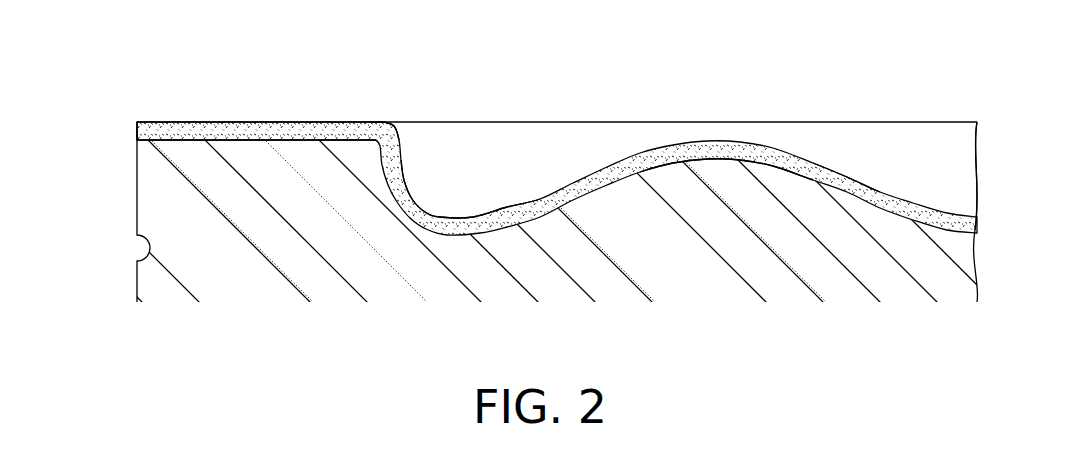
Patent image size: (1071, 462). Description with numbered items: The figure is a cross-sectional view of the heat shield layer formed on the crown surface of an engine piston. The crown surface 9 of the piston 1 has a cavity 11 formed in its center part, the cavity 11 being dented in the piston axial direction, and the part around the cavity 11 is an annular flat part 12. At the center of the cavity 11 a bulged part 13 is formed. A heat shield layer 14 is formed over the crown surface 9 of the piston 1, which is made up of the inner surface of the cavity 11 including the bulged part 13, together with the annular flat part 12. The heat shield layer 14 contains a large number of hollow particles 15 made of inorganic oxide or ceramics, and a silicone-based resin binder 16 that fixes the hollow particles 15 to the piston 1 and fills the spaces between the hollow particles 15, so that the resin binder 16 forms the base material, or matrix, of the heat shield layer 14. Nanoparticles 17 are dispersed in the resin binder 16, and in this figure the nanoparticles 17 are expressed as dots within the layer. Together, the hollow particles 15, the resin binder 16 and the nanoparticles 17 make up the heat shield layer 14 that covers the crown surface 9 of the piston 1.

The piston 1 is at (137, 212).
The crown surface 9 is at (550, 122).
The cavity 11 is at (912, 150).
The annular flat part 12 is at (238, 137).
The bulged part 13 is at (727, 158).
The heat shield layer 14 is at (137, 128).
The hollow particles 15 is at (390, 127).
The resin binder 16 is at (468, 210).
The nanoparticles 17 is at (344, 122).